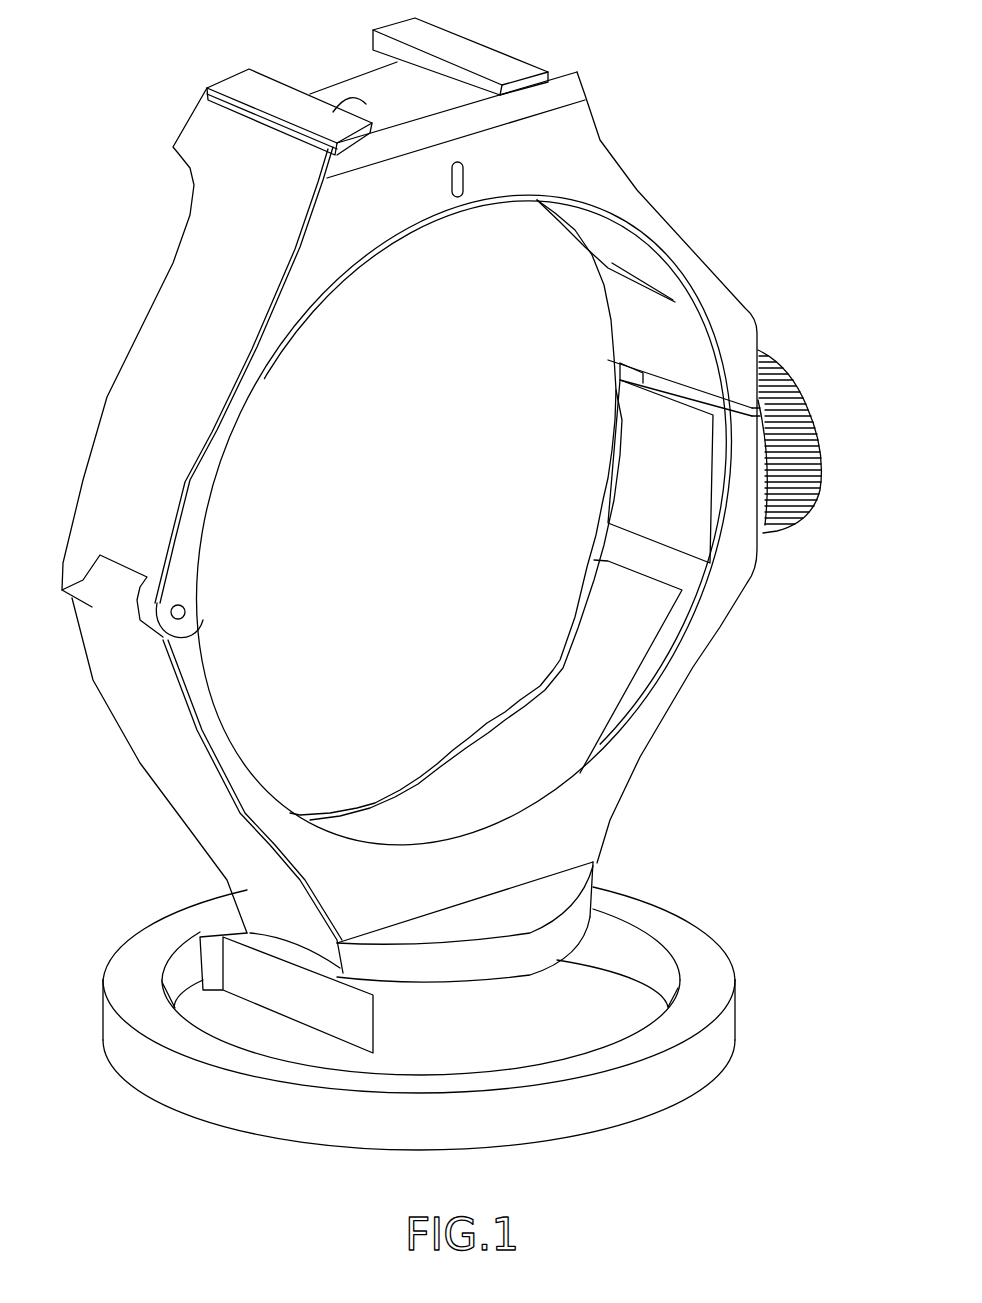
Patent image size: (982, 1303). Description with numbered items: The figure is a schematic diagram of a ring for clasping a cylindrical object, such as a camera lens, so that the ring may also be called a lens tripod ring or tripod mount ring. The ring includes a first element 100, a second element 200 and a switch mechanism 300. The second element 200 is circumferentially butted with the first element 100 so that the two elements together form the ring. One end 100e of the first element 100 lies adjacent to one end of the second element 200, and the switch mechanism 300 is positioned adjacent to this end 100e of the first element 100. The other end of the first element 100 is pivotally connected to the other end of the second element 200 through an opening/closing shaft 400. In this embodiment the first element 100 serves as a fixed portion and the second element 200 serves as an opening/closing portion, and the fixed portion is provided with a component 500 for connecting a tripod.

The first element 100 is at (122, 712).
The end of the first element 100e is at (591, 444).
The second element 200 is at (130, 393).
The switch mechanism 300 is at (792, 358).
The opening/closing shaft 400 is at (182, 603).
The component for connecting a tripod 500 is at (148, 1077).